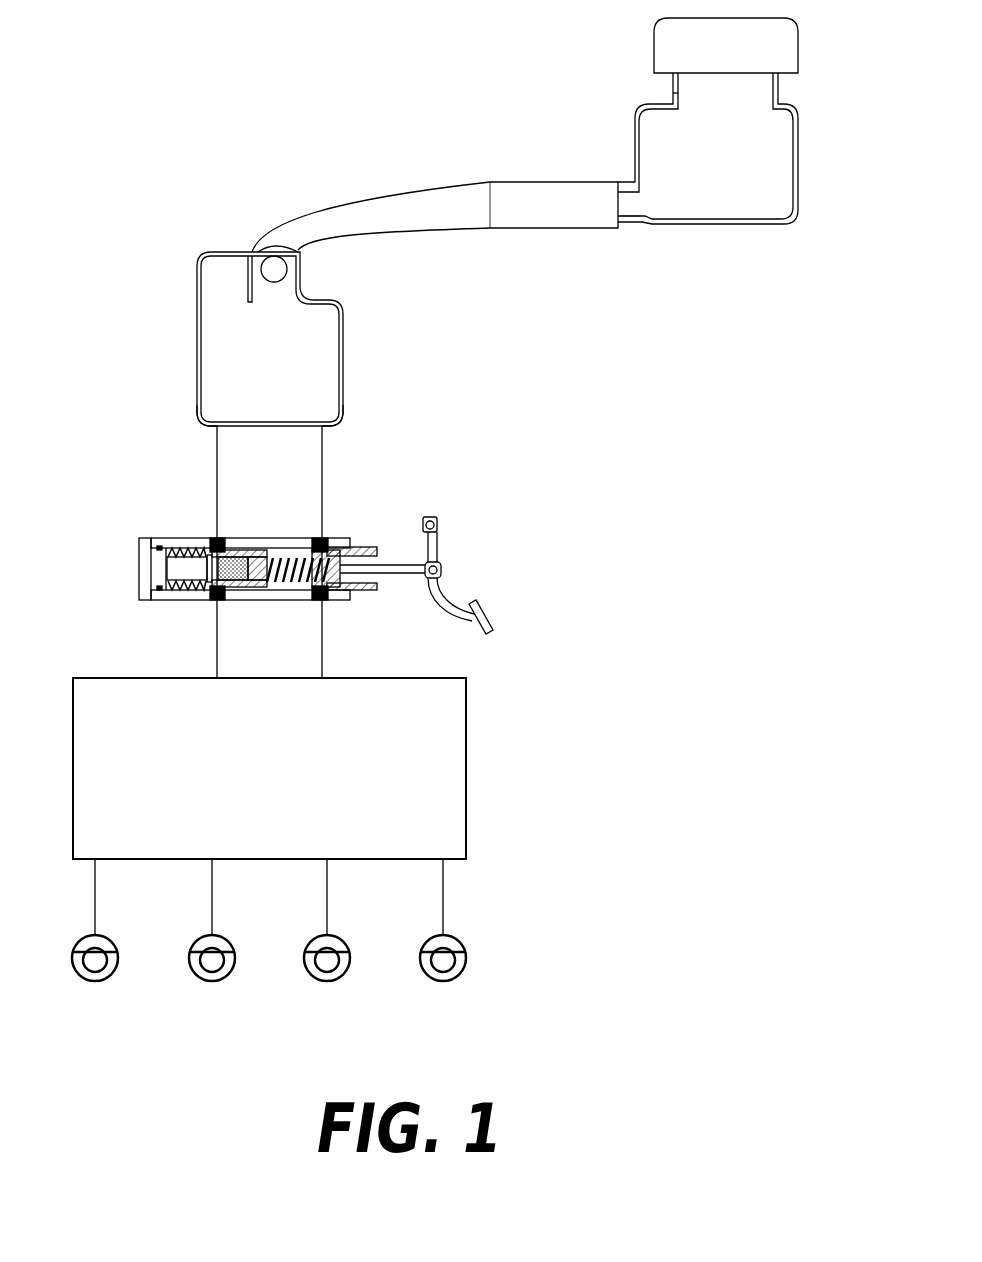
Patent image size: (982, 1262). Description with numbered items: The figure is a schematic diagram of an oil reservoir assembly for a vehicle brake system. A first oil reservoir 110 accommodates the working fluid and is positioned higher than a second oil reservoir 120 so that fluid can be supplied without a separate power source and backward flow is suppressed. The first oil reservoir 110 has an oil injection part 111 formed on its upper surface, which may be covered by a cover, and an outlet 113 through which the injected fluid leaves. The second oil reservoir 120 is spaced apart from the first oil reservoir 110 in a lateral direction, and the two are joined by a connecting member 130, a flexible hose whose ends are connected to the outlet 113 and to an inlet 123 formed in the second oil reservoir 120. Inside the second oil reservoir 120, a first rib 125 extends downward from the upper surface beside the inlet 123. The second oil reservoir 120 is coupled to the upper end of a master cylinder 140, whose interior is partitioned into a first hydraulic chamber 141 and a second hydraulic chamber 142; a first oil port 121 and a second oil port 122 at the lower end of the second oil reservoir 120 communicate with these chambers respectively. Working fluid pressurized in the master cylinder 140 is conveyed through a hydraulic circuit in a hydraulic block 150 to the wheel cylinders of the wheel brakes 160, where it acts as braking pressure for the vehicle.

The first oil reservoir 110 is at (643, 145).
The oil injection part 111 is at (677, 93).
The outlet 113 is at (637, 207).
The second oil reservoir 120 is at (224, 265).
The first oil port 121 is at (199, 420).
The second oil port 122 is at (343, 417).
The inlet 123 is at (290, 274).
The first rib 125 is at (248, 290).
The connecting member 130 is at (440, 190).
The master cylinder 140 is at (282, 537).
The first hydraulic chamber 141 is at (186, 560).
The second hydraulic chamber 142 is at (290, 555).
The hydraulic block 150 is at (490, 772).
The wheel brake 160 is at (200, 972).